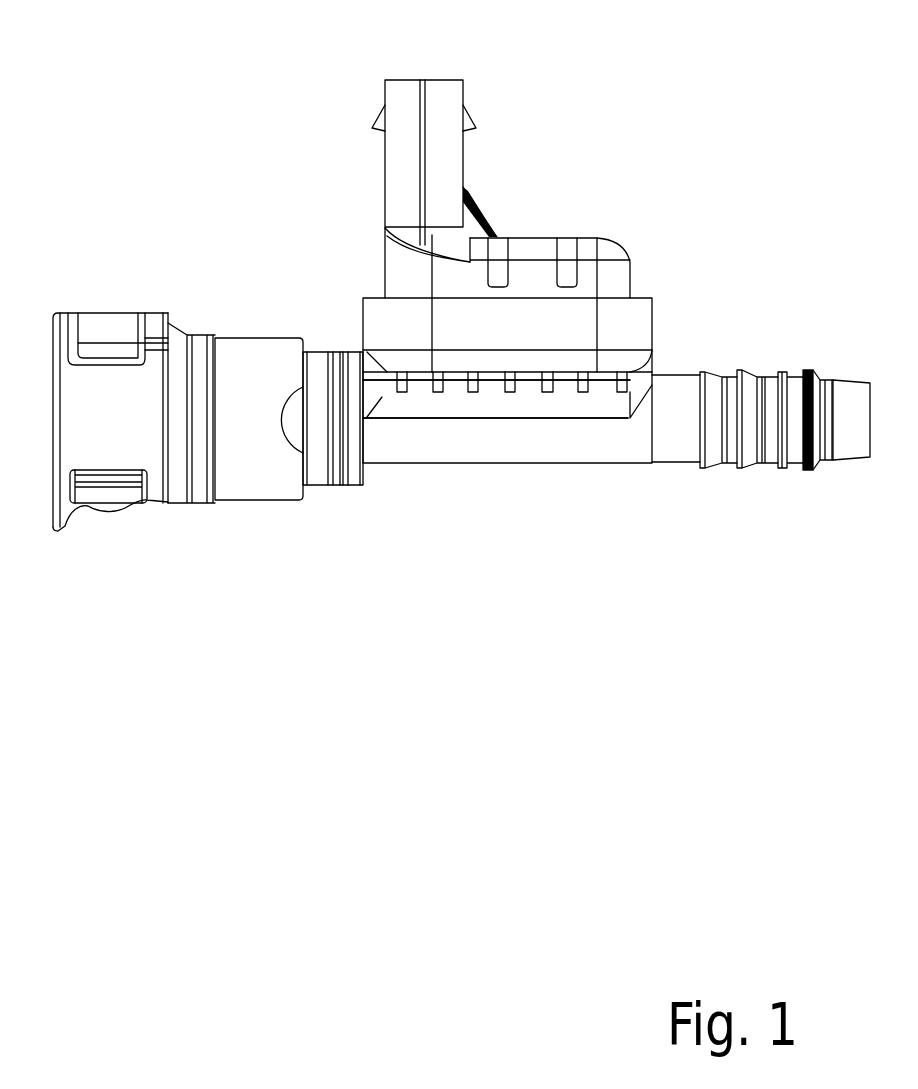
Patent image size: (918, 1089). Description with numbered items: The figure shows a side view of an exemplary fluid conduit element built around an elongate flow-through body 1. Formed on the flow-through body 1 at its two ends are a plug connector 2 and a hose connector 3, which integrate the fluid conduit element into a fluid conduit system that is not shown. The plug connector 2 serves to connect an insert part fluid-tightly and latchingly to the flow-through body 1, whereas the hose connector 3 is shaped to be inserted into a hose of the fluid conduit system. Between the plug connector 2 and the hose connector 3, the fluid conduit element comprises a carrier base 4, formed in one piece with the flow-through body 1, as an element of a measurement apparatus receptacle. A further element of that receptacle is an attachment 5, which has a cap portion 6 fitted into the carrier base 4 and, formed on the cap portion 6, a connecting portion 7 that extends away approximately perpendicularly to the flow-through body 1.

The flow-through body 1 is at (433, 442).
The plug connector 2 is at (152, 455).
The hose connector 3 is at (747, 447).
The carrier base 4 is at (523, 362).
The attachment 5 is at (510, 195).
The cap portion 6 is at (583, 248).
The connecting portion 7 is at (400, 162).